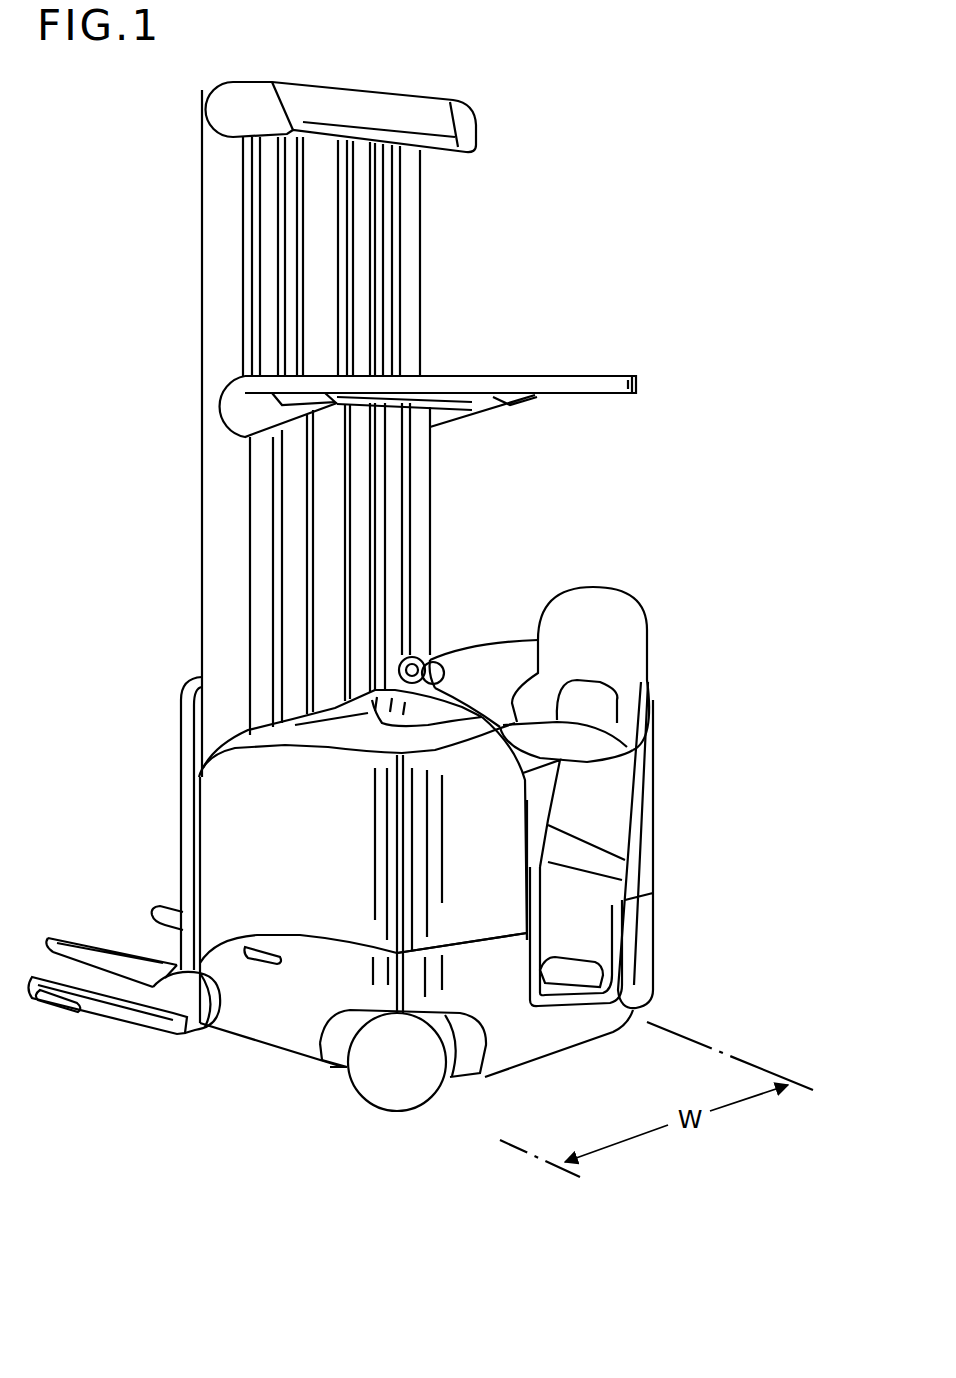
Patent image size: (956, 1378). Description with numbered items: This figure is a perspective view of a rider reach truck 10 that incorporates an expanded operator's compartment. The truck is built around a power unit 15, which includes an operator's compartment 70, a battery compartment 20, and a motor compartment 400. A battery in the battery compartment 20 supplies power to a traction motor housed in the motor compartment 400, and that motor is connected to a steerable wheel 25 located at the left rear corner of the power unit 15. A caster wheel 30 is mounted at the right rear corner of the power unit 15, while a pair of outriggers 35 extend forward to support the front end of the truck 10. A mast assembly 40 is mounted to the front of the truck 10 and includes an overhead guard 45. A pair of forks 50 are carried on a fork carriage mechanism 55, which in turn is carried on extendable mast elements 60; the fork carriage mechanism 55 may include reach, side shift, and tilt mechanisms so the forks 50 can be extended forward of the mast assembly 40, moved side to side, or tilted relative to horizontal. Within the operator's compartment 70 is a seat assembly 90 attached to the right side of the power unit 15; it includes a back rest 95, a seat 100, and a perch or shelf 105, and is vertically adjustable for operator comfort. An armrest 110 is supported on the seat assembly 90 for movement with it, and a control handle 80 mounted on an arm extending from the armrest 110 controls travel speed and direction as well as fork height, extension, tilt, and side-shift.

The rider reach truck 10 is at (128, 805).
The power unit 15 is at (508, 1022).
The battery compartment 20 is at (297, 914).
The steerable wheel 25 is at (403, 1095).
The caster wheel 30 is at (645, 998).
The outriggers 35 is at (88, 1010).
The mast assembly 40 is at (196, 488).
The overhead guard 45 is at (638, 384).
The forks 50 is at (93, 940).
The fork carriage mechanism 55 is at (178, 706).
The extendable mast elements 60 is at (420, 270).
The operator's compartment 70 is at (540, 786).
The control handle 80 is at (433, 660).
The seat assembly 90 is at (621, 581).
The back rest 95 is at (647, 627).
The seat 100 is at (593, 753).
The perch or shelf 105 is at (595, 698).
The armrest 110 is at (487, 647).
The motor compartment 400 is at (440, 912).